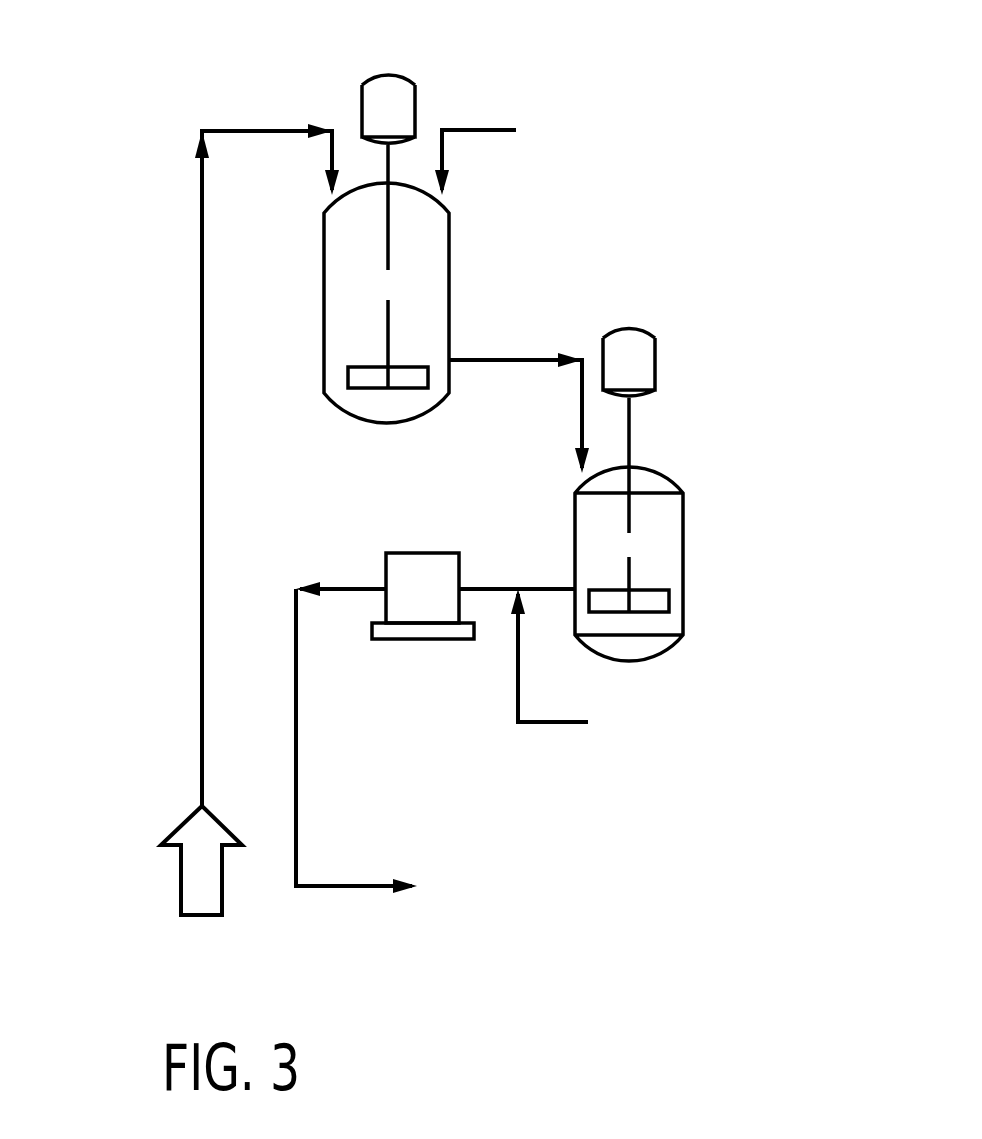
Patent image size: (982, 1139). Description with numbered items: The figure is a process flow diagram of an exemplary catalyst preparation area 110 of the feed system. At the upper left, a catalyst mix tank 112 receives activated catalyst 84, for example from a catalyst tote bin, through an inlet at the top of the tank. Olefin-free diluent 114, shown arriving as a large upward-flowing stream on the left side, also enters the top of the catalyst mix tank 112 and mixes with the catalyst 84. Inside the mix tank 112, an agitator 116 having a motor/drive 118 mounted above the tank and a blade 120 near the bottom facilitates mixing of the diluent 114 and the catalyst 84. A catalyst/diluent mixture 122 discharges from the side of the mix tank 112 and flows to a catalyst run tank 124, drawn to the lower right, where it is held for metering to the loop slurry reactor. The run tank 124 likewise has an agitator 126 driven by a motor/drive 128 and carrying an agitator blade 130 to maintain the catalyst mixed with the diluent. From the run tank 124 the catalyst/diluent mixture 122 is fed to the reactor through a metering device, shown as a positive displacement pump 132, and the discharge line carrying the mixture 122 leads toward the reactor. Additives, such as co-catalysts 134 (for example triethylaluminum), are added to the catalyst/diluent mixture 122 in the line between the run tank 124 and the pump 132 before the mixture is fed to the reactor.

The catalyst preparation area 110 is at (108, 92).
The catalyst mix tank 112 is at (449, 235).
The olefin-free diluent 114 is at (200, 475).
The agitator 116 is at (388, 232).
The motor/drive 118 is at (368, 107).
The blade 120 is at (365, 378).
The catalyst/diluent mixture 122 is at (505, 362).
The catalyst run tank 124 is at (683, 508).
The agitator 126 is at (627, 512).
The motor/drive 128 is at (655, 345).
The agitator blade 130 is at (650, 612).
The positive displacement pump 132 is at (425, 565).
The co-catalysts 134 is at (543, 724).
The activated catalyst 84 is at (477, 130).